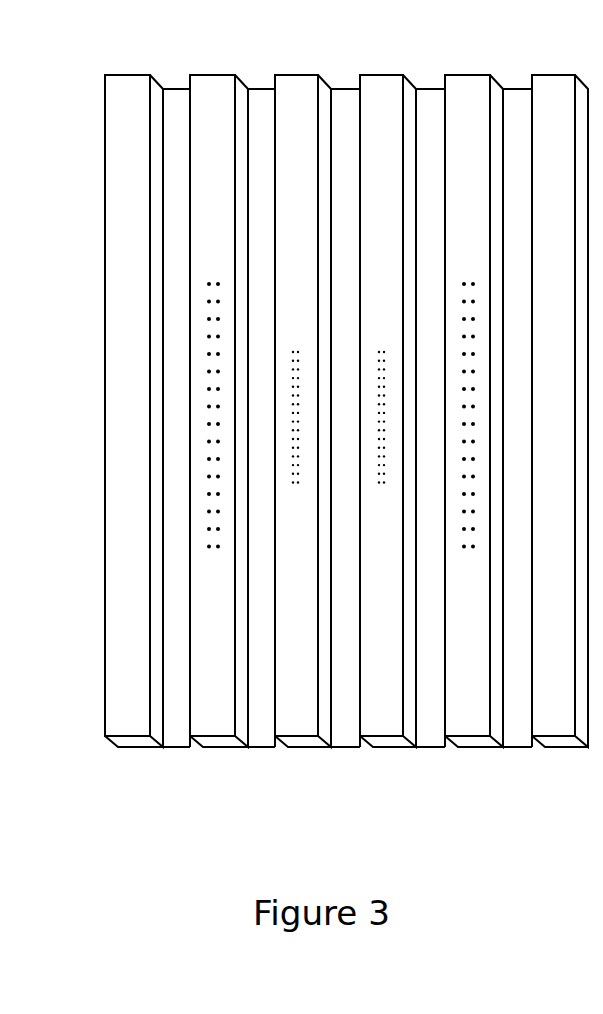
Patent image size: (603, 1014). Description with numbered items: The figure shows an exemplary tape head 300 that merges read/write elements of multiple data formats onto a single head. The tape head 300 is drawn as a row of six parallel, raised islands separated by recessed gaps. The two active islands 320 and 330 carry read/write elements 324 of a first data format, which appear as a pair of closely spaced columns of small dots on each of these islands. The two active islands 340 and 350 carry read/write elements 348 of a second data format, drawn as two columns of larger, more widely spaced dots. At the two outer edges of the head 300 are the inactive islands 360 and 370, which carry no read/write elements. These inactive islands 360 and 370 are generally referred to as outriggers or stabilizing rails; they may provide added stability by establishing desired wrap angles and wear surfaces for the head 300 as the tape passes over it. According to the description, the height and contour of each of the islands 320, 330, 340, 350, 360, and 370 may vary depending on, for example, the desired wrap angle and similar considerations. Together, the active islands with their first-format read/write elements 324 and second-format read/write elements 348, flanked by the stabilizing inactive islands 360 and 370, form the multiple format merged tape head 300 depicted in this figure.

The tape head 300 is at (334, 61).
The inactive island 370 is at (131, 724).
The active island 350 is at (146, 449).
The active island 330 is at (193, 449).
The active island 320 is at (389, 724).
The active island 340 is at (475, 724).
The inactive island 360 is at (554, 724).
The read/write elements 324 is at (275, 402).
The read/write elements 348 is at (195, 498).